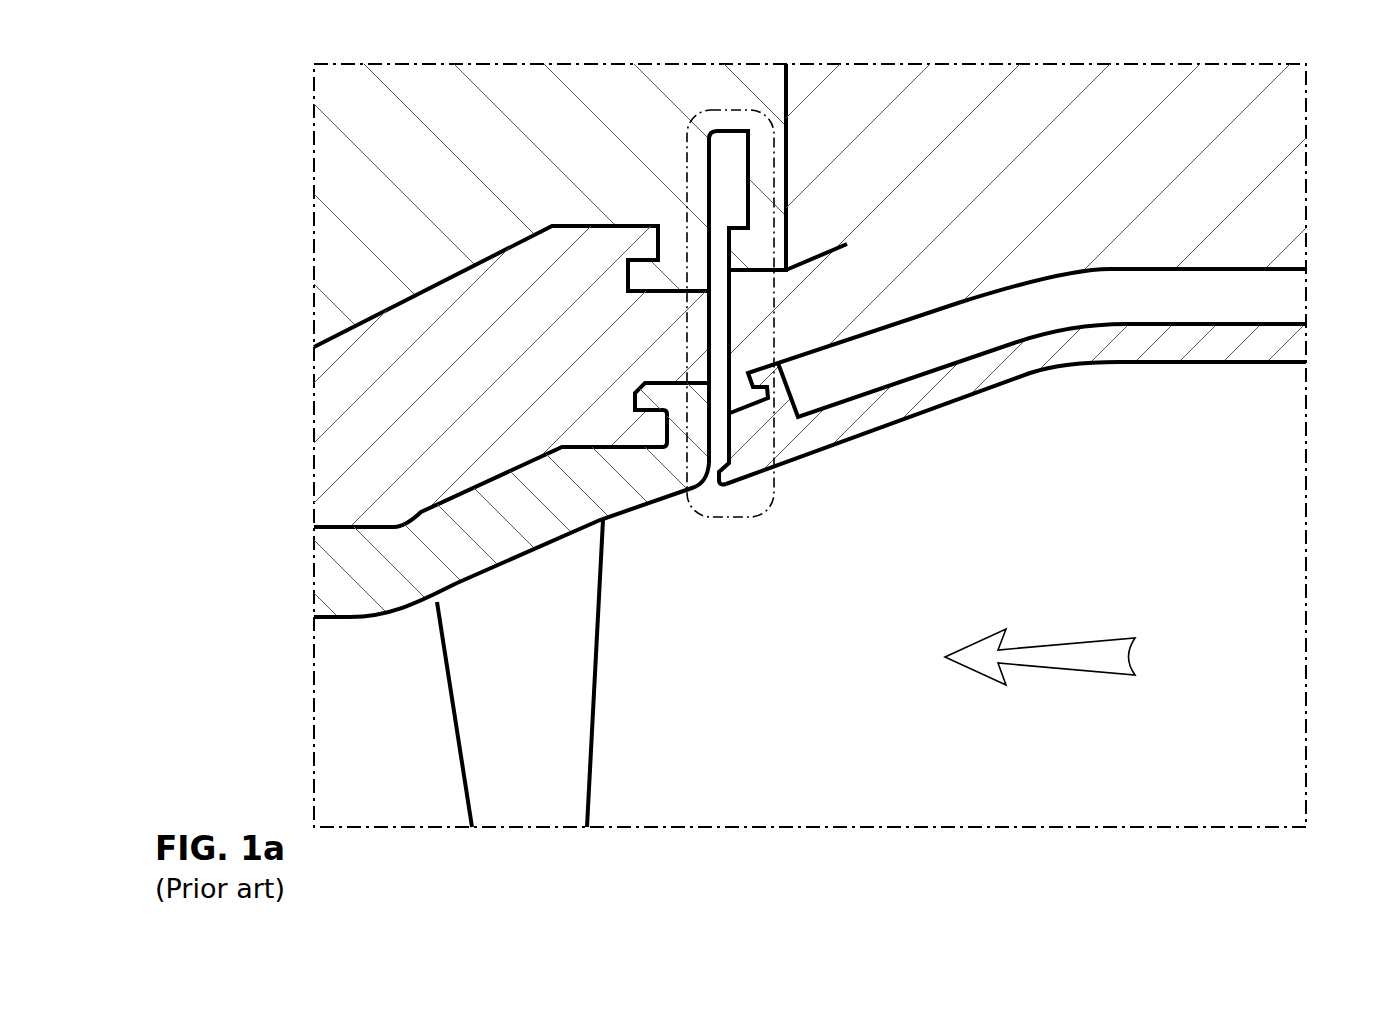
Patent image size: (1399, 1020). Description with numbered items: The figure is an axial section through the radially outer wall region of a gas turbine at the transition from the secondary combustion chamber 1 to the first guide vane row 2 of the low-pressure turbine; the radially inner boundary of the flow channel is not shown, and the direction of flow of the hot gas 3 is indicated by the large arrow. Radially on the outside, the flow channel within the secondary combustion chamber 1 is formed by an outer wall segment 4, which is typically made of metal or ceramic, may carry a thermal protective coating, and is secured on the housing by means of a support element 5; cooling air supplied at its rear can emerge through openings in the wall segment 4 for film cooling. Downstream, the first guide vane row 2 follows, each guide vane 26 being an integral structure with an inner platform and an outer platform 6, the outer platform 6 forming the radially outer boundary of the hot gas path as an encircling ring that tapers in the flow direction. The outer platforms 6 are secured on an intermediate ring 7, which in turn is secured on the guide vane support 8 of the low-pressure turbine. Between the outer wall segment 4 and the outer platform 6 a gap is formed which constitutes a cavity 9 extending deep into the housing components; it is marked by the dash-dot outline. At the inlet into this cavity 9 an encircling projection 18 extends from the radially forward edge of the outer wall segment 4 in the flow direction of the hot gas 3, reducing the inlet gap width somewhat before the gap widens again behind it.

The secondary combustion chamber 1 is at (1306, 565).
The first guide vane row 2 is at (410, 717).
The hot gas 3 is at (1056, 656).
The outer wall segment 4 is at (1139, 346).
The support element 5 is at (1062, 159).
The outer platform 6 is at (411, 565).
The intermediate ring 7 is at (472, 373).
The guide vane support 8 is at (483, 159).
The cavity 9 is at (746, 519).
The encircling projection 18 is at (722, 483).
The guide vane 26 is at (505, 724).